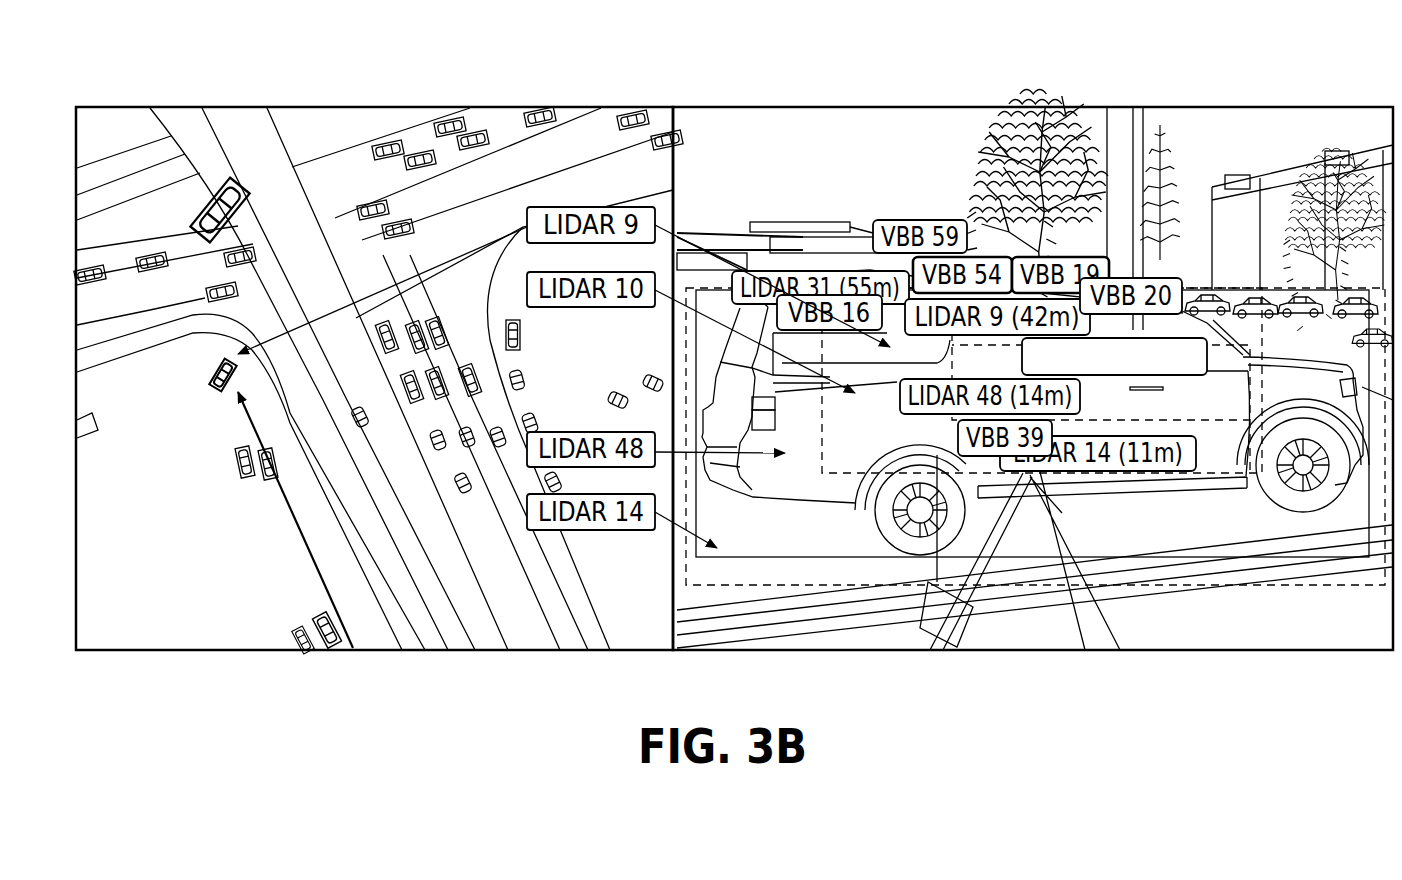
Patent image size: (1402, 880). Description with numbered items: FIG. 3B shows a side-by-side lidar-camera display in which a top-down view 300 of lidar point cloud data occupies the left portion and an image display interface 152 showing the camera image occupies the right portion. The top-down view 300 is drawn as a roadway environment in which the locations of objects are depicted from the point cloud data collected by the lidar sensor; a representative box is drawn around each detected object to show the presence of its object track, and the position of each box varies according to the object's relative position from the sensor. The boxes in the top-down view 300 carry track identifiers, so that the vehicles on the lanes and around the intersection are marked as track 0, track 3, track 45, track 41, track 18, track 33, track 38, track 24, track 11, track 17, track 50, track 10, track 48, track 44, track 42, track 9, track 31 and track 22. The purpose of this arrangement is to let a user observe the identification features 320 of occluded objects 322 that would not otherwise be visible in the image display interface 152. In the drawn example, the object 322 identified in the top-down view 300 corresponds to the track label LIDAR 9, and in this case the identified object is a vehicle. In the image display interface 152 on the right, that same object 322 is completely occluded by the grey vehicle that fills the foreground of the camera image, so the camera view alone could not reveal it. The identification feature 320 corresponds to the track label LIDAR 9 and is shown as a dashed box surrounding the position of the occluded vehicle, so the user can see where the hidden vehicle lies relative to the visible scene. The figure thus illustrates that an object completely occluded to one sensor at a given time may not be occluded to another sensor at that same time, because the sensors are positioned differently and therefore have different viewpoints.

The top-down view 300 is at (77, 92).
The image display interface 152 is at (673, 92).
The identification feature 320 is at (1120, 375).
The occluded object 322 is at (217, 397).
The ego vehicle object 0 is at (219, 198).
The detected vehicle object 3 is at (388, 145).
The detected vehicle object 45 is at (446, 125).
The detected vehicle object 41 is at (480, 142).
The detected vehicle object 18 is at (423, 163).
The detected vehicle object 33 is at (372, 208).
The detected vehicle object 38 is at (402, 233).
The detected vehicle object 24 is at (633, 128).
The detected vehicle object 11 is at (252, 252).
The detected vehicle object 17 is at (92, 280).
The detected vehicle object 50 is at (165, 258).
The detected vehicle object 10 is at (380, 325).
The detected vehicle object 48 is at (413, 330).
The detected vehicle object 44 is at (442, 328).
The detected vehicle object 42 is at (470, 374).
The detected vehicle object 9 is at (217, 370).
The detected vehicle object 31 is at (276, 472).
The detected vehicle object 22 is at (245, 470).